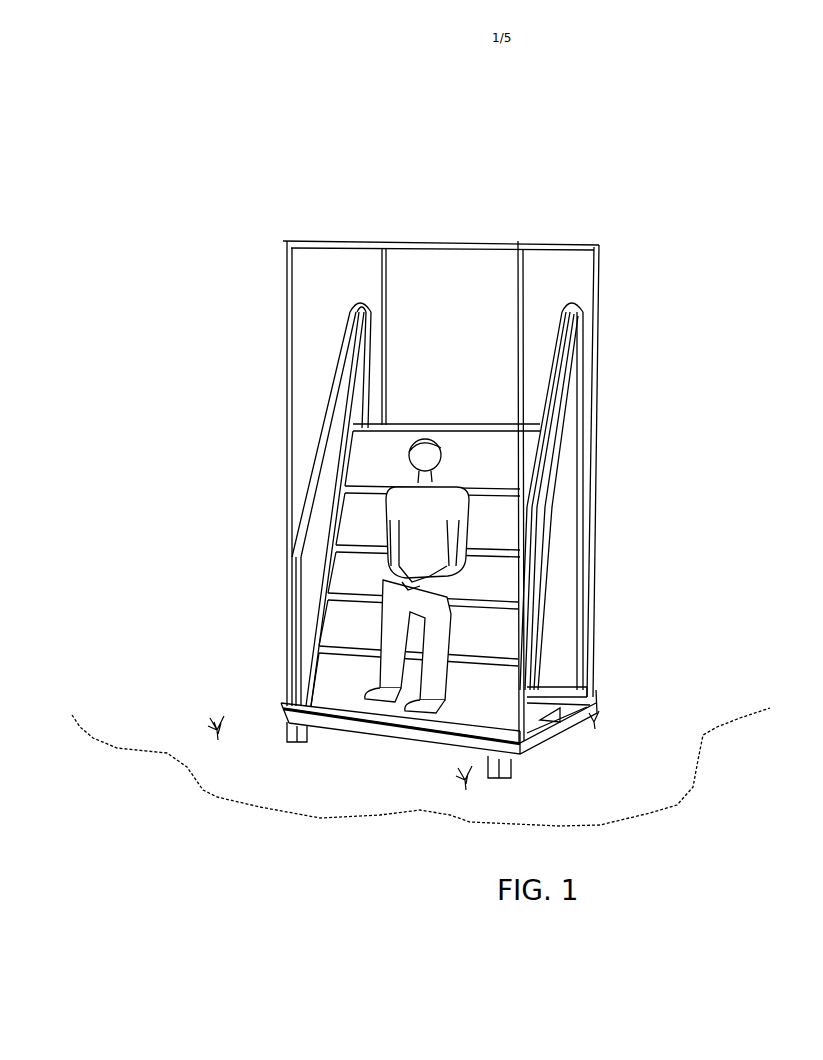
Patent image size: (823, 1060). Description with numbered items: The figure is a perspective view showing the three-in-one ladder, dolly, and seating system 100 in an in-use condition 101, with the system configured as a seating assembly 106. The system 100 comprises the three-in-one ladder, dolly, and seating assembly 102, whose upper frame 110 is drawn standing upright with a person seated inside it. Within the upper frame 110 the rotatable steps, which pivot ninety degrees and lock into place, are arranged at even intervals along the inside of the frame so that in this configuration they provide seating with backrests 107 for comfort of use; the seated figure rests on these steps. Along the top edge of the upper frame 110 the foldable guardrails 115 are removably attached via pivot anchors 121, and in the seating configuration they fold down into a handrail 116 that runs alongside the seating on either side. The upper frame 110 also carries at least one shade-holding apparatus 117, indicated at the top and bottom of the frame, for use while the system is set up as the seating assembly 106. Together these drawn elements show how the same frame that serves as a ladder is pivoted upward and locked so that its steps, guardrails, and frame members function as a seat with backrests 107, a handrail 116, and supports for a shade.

The 3 in 1 ladder, dolly, and seating system 100 is at (546, 66).
The in-use condition 101 is at (560, 84).
The 3 in 1 ladder, dolly, and seating assembly 102 is at (572, 114).
The seating assembly 106 is at (587, 142).
The seating with backrests 107 is at (489, 527).
The upper frame 110 is at (567, 413).
The foldable guardrails 115 is at (343, 348).
The handrail 116 is at (304, 494).
The shade-holding apparatus 117 is at (281, 240).
The pivot anchors 121 is at (582, 432).